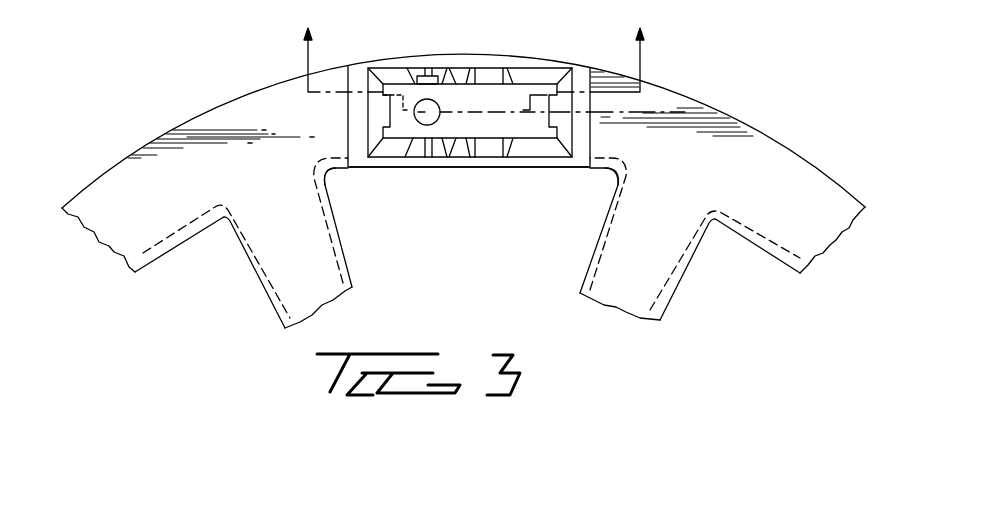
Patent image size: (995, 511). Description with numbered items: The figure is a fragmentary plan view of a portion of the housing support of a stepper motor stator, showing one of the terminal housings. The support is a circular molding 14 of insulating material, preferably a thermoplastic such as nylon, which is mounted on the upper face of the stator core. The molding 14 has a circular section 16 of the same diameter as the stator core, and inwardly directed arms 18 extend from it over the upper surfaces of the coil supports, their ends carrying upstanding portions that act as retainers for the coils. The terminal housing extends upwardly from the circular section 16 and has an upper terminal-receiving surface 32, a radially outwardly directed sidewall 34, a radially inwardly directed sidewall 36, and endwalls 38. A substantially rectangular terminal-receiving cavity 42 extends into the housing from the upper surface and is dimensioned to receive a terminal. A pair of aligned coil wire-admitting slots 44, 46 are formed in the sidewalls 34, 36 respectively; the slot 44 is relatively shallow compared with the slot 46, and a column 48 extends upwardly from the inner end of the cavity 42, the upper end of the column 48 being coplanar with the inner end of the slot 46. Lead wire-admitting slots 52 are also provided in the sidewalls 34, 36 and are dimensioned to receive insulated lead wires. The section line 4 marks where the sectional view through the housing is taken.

The section line 4- 4 is at (474, 47).
The circular molding 14 is at (783, 106).
The circular section 16 is at (798, 167).
The inwardly directed arms 18 is at (653, 280).
The upper terminal-receiving surface 32 is at (580, 67).
The radially outwardly directed sidewall 34 is at (475, 62).
The radially inwardly directed sidewall 36 is at (535, 168).
The endwalls 38 is at (348, 131).
The terminal-receiving cavity 42 is at (515, 97).
The coil wire-admitting slot 44 is at (432, 68).
The coil wire-admitting slot 46 is at (425, 160).
The column 48 is at (418, 118).
The lead wire-admitting slots 52 is at (490, 72).